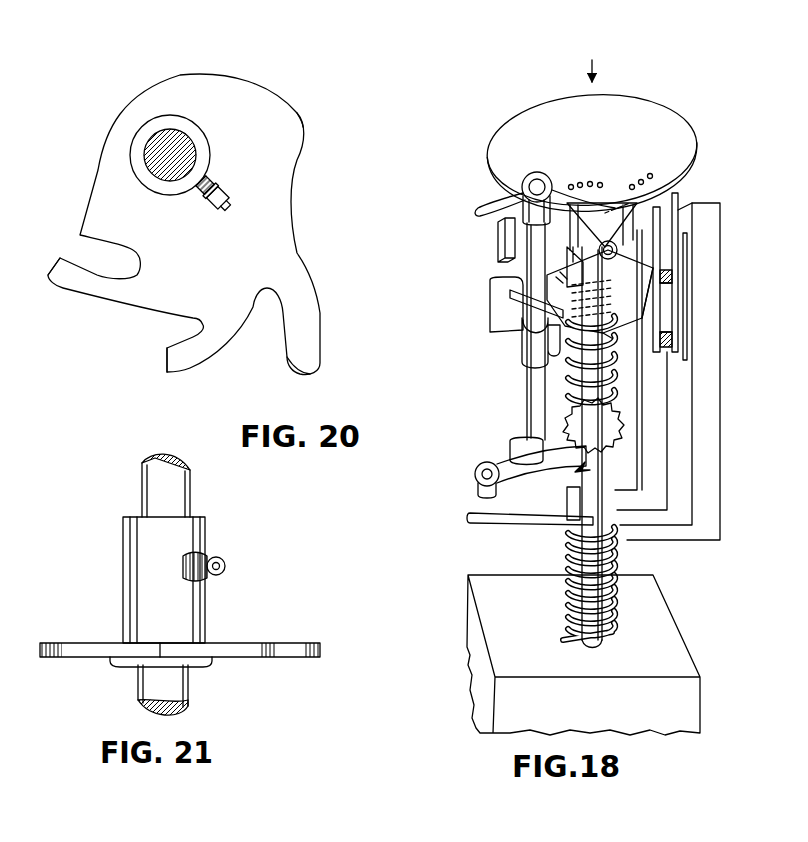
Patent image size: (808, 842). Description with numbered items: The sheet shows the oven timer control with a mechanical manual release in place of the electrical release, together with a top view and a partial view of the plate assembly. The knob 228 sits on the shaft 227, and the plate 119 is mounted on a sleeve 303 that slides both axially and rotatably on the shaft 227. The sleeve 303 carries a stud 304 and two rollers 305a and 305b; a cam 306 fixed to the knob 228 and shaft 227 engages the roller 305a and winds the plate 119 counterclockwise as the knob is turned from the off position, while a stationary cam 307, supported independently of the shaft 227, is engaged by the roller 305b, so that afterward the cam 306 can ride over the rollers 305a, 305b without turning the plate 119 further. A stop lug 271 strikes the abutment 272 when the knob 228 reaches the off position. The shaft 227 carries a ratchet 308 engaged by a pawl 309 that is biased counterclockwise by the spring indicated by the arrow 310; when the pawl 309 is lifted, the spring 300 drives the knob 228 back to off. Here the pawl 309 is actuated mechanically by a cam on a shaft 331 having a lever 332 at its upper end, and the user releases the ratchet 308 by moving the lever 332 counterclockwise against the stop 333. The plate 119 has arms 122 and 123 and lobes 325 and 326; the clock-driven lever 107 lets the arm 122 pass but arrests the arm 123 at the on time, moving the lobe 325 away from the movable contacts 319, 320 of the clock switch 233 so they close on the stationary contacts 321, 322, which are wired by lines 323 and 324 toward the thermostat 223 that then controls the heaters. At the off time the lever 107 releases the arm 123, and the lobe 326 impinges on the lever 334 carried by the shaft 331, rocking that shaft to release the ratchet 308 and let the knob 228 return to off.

In FIG. 18, the lever 107 is at (488, 295).
In FIG. 20, the plate 119 is at (293, 257).
In FIG. 21, the plate 119 is at (287, 650).
In FIG. 18, the plate 119 is at (635, 255).
In FIG. 20, the arm 122 is at (63, 270).
In FIG. 20, the arm 123 is at (166, 358).
In FIG. 18, the thermostat 223 is at (612, 718).
In FIG. 20, the shaft 227 is at (177, 137).
In FIG. 21, the shaft 227 is at (177, 684).
In FIG. 18, the knob 228 is at (613, 106).
In FIG. 18, the clock switch 233 is at (668, 308).
In FIG. 18, the stop lug 271 is at (572, 527).
In FIG. 18, the abutment 272 is at (519, 524).
In FIG. 18, the spring 300 is at (607, 560).
In FIG. 21, the sleeve 303 is at (203, 522).
In FIG. 20, the stud 304 is at (227, 203).
In FIG. 21, the stud 304 is at (219, 570).
In FIG. 20, the roller 305a is at (208, 178).
In FIG. 21, the roller 305a is at (203, 552).
In FIG. 18, the roller 305a is at (561, 282).
In FIG. 20, the roller 305b is at (222, 188).
In FIG. 21, the roller 305b is at (223, 563).
In FIG. 18, the cam 306 is at (580, 226).
In FIG. 18, the stationary cam 307 is at (603, 213).
In FIG. 18, the ratchet 308 is at (610, 430).
In FIG. 18, the pawl 309 is at (520, 481).
In FIG. 18, the spring 310 is at (578, 475).
In FIG. 18, the movable contact 319 is at (663, 252).
In FIG. 18, the movable contact 320 is at (682, 270).
In FIG. 18, the stationary contact 321 is at (674, 197).
In FIG. 18, the stationary contact 322 is at (678, 205).
In FIG. 18, the line 323 is at (693, 348).
In FIG. 18, the line 324 is at (728, 378).
In FIG. 20, the lobe 325 is at (285, 106).
In FIG. 18, the lobe 325 is at (652, 278).
In FIG. 20, the lobe 326 is at (303, 362).
In FIG. 18, the lobe 326 is at (620, 320).
In FIG. 18, the shaft 331 is at (529, 412).
In FIG. 18, the lever 332 is at (490, 207).
In FIG. 18, the stop 333 is at (497, 240).
In FIG. 18, the lever 334 is at (547, 370).